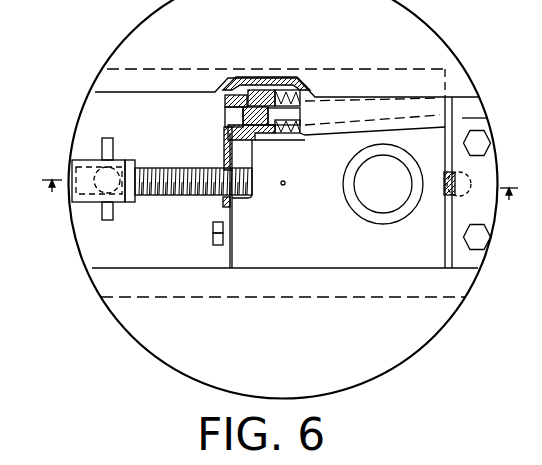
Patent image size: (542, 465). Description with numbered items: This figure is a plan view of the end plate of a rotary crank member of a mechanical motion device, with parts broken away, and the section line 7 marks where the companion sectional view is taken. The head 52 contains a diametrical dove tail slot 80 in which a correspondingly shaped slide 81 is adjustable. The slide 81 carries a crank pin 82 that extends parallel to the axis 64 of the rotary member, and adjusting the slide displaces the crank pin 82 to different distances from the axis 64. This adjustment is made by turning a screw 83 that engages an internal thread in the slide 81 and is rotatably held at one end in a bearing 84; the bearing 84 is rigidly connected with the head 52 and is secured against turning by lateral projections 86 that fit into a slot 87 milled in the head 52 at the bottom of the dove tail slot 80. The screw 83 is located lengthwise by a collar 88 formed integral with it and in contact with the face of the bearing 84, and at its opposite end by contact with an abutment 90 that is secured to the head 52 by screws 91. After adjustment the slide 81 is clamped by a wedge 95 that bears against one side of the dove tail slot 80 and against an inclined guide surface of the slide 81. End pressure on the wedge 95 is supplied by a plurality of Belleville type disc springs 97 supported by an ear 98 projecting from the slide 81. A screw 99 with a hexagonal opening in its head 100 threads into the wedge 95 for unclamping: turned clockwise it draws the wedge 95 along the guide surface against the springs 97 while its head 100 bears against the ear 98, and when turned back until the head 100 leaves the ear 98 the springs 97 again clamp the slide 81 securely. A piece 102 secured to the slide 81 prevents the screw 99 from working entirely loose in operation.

The section line 7- 7 is at (280, 201).
The head 52 is at (291, 9).
The axis 64 is at (288, 172).
The dove tail slot 80 is at (205, 258).
The slide 81 is at (356, 242).
The crank pin 82 is at (351, 190).
The screw 83 is at (197, 196).
The bearing 84 is at (88, 190).
The lateral projections 86 is at (112, 206).
The slot 87 is at (110, 214).
The collar 88 is at (130, 160).
The abutment 90 is at (483, 178).
The screws 91 is at (478, 135).
The wedge 95 is at (370, 108).
The Belleville type disc springs 97 is at (284, 94).
The ear 98 is at (253, 90).
The screw 99 is at (228, 106).
The head 100 is at (240, 128).
The piece 102 is at (224, 157).